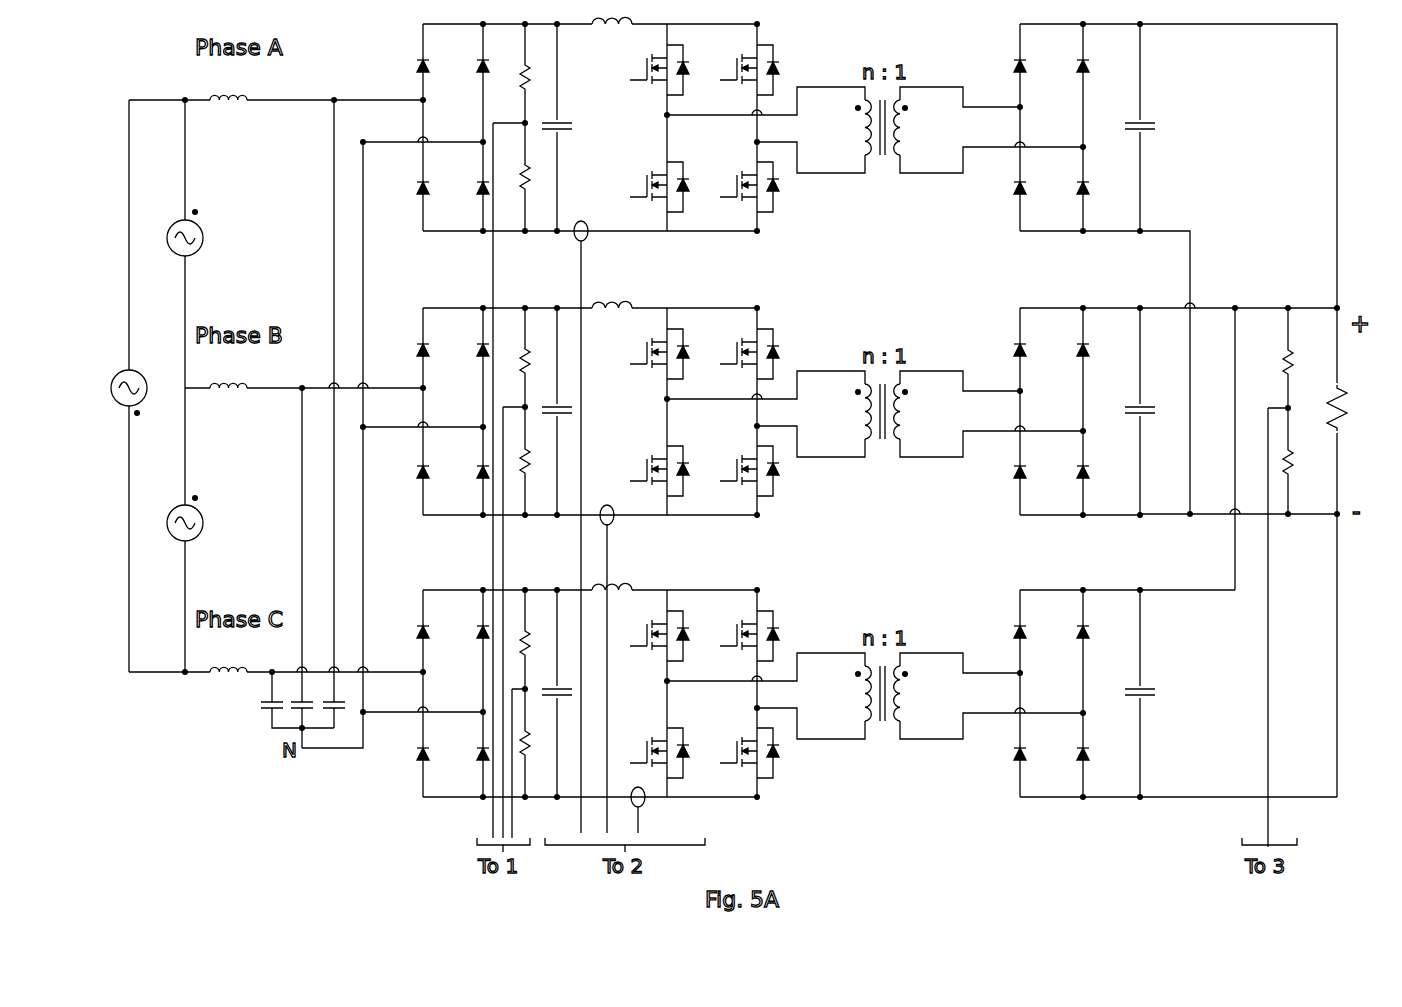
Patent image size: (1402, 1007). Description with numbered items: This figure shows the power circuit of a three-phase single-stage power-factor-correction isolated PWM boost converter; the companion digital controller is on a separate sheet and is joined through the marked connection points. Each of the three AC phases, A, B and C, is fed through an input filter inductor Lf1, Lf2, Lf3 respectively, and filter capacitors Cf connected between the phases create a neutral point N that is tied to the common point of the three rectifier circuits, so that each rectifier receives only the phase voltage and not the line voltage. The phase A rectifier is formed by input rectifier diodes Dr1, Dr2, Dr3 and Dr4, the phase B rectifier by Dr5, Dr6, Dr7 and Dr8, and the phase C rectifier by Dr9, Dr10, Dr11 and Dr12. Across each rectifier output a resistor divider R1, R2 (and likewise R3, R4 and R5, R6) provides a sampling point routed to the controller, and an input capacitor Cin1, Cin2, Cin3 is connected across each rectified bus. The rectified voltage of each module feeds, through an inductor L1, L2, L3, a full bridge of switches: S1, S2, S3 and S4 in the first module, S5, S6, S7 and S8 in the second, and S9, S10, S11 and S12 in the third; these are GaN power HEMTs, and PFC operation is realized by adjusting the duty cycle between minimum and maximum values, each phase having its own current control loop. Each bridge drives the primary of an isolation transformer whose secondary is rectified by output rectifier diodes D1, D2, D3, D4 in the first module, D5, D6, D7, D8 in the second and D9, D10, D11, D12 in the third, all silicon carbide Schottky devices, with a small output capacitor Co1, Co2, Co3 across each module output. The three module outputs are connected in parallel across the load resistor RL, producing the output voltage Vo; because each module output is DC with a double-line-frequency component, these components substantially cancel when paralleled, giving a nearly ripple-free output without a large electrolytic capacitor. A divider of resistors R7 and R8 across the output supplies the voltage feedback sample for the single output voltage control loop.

The input filter inductor Lf1 is at (228, 84).
The input filter inductor Lf2 is at (228, 373).
The input filter inductor Lf3 is at (228, 656).
The filter capacitor Cf is at (290, 709).
The input rectifier diode Dr1 is at (406, 66).
The input rectifier diode Dr2 is at (406, 188).
The input rectifier diode Dr3 is at (467, 66).
The input rectifier diode Dr4 is at (467, 188).
The input rectifier diode Dr5 is at (406, 350).
The input rectifier diode Dr6 is at (406, 472).
The input rectifier diode Dr7 is at (467, 350).
The input rectifier diode Dr8 is at (467, 472).
The input rectifier diode Dr9 is at (406, 632).
The input rectifier diode Dr10 is at (402, 754).
The input rectifier diode Dr11 is at (464, 632).
The input rectifier diode Dr12 is at (464, 754).
The input voltage divider resistor R1 is at (538, 77).
The input voltage divider resistor R2 is at (538, 177).
The input voltage divider resistor R3 is at (538, 361).
The input voltage divider resistor R4 is at (538, 461).
The input voltage divider resistor R5 is at (538, 643).
The input voltage divider resistor R6 is at (538, 743).
The output voltage divider resistor R7 is at (1301, 362).
The output voltage divider resistor R8 is at (1301, 462).
The load resistor RL is at (1322, 408).
The output voltage Vo is at (1362, 414).
The input capacitor Cin1 is at (571, 112).
The input capacitor Cin2 is at (571, 396).
The input capacitor Cin3 is at (571, 678).
The inductor L1 is at (612, 12).
The inductor L2 is at (612, 294).
The inductor L3 is at (612, 576).
The switch S1 is at (655, 70).
The switch S2 is at (655, 187).
The switch S3 is at (745, 70).
The switch S4 is at (745, 187).
The switch S5 is at (655, 354).
The switch S6 is at (655, 471).
The switch S7 is at (745, 354).
The switch S8 is at (745, 471).
The switch S9 is at (655, 636).
The switch S10 is at (651, 753).
The switch S11 is at (742, 636).
The switch S12 is at (742, 753).
The output rectifier diode D1 is at (1005, 68).
The output rectifier diode D2 is at (1005, 190).
The output rectifier diode D3 is at (1068, 68).
The output rectifier diode D4 is at (1068, 190).
The output rectifier diode D5 is at (1005, 352).
The output rectifier diode D6 is at (1005, 474).
The output rectifier diode D7 is at (1068, 352).
The output rectifier diode D8 is at (1068, 474).
The output rectifier diode D9 is at (1005, 634).
The output rectifier diode D10 is at (1002, 756).
The output rectifier diode D11 is at (1065, 634).
The output rectifier diode D12 is at (1065, 756).
The output capacitor Co1 is at (1130, 113).
The output capacitor Co2 is at (1130, 397).
The output capacitor Co3 is at (1130, 679).